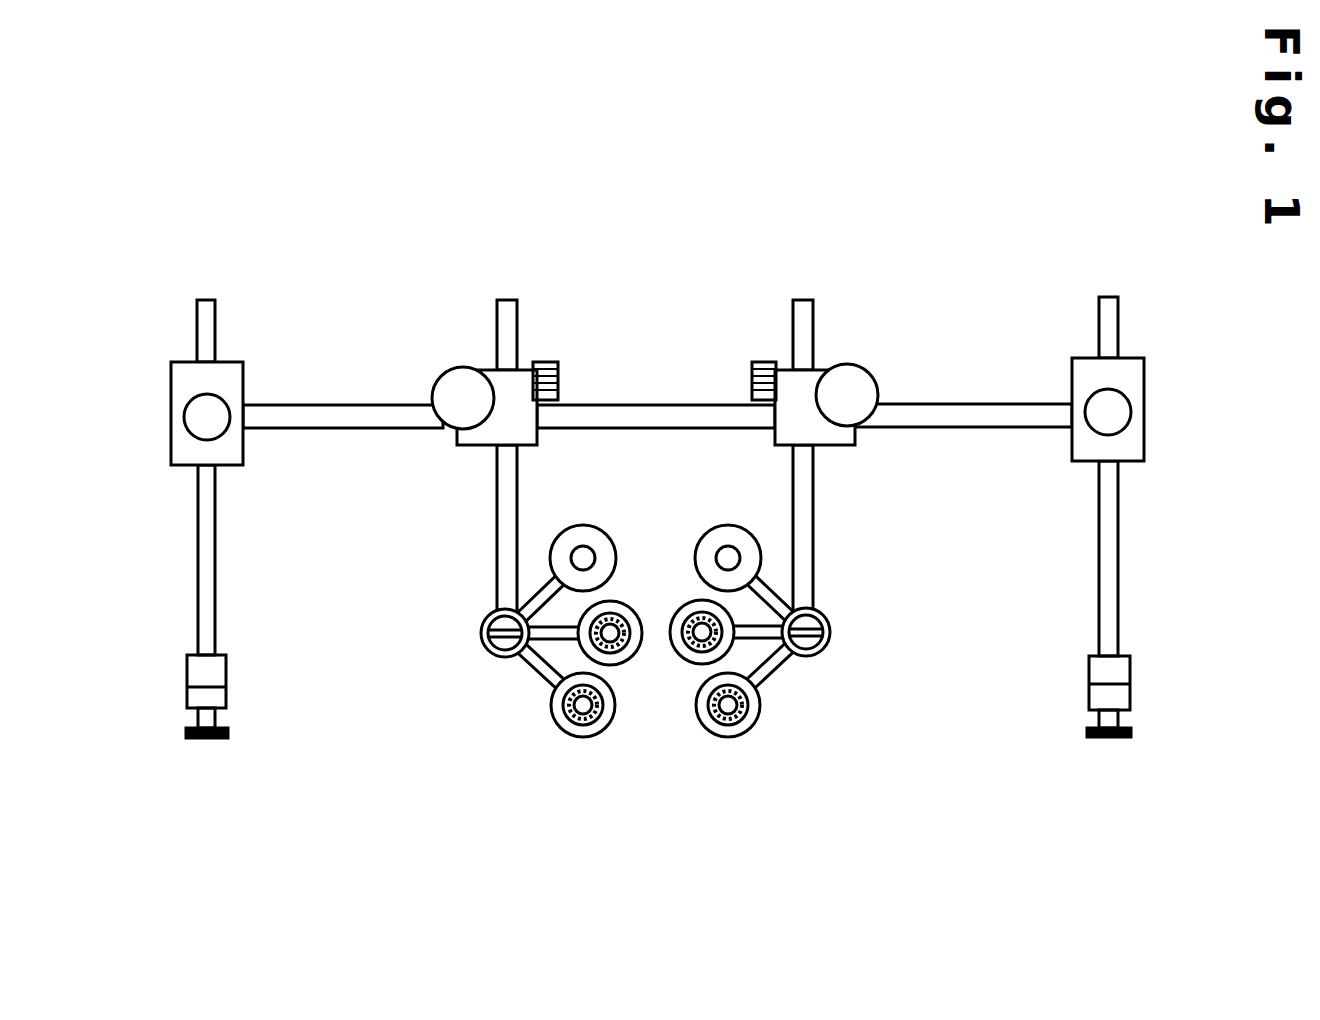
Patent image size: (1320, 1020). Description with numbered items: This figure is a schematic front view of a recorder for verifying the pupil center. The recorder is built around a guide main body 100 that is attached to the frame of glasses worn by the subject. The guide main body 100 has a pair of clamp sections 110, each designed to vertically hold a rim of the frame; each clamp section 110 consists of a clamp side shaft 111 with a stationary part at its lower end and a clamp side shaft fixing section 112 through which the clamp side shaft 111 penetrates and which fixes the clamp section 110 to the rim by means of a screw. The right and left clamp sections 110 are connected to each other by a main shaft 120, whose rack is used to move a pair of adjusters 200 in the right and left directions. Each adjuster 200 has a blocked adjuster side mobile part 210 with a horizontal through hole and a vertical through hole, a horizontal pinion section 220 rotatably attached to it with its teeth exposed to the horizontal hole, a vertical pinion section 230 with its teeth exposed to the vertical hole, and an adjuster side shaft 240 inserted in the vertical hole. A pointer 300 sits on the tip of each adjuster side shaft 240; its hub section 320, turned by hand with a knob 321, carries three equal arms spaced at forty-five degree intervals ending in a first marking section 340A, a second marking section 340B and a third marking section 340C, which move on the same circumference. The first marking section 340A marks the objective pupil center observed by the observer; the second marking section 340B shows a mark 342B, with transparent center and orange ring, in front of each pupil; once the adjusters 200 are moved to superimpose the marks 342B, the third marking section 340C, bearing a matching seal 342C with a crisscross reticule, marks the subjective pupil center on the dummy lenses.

The guide main body 100 is at (657, 487).
The clamp section 110 is at (657, 517).
The clamp side shaft 111 is at (216, 603).
The clamp side shaft fixing section 112 is at (168, 384).
The main shaft 120 is at (987, 410).
The adjuster 200 is at (645, 424).
The adjuster side mobile part 210 is at (494, 373).
The horizontal pinion section 220 is at (434, 390).
The vertical pinion section 230 is at (560, 376).
The adjuster side shaft 240 is at (506, 300).
The pointer 300 is at (662, 656).
The hub section 320 is at (662, 632).
The knob 321 is at (487, 640).
The first marking section 340A is at (592, 519).
The second marking section 340B is at (634, 587).
The third marking section 340C is at (596, 744).
The mark 342B is at (588, 648).
The seal 342C is at (560, 712).